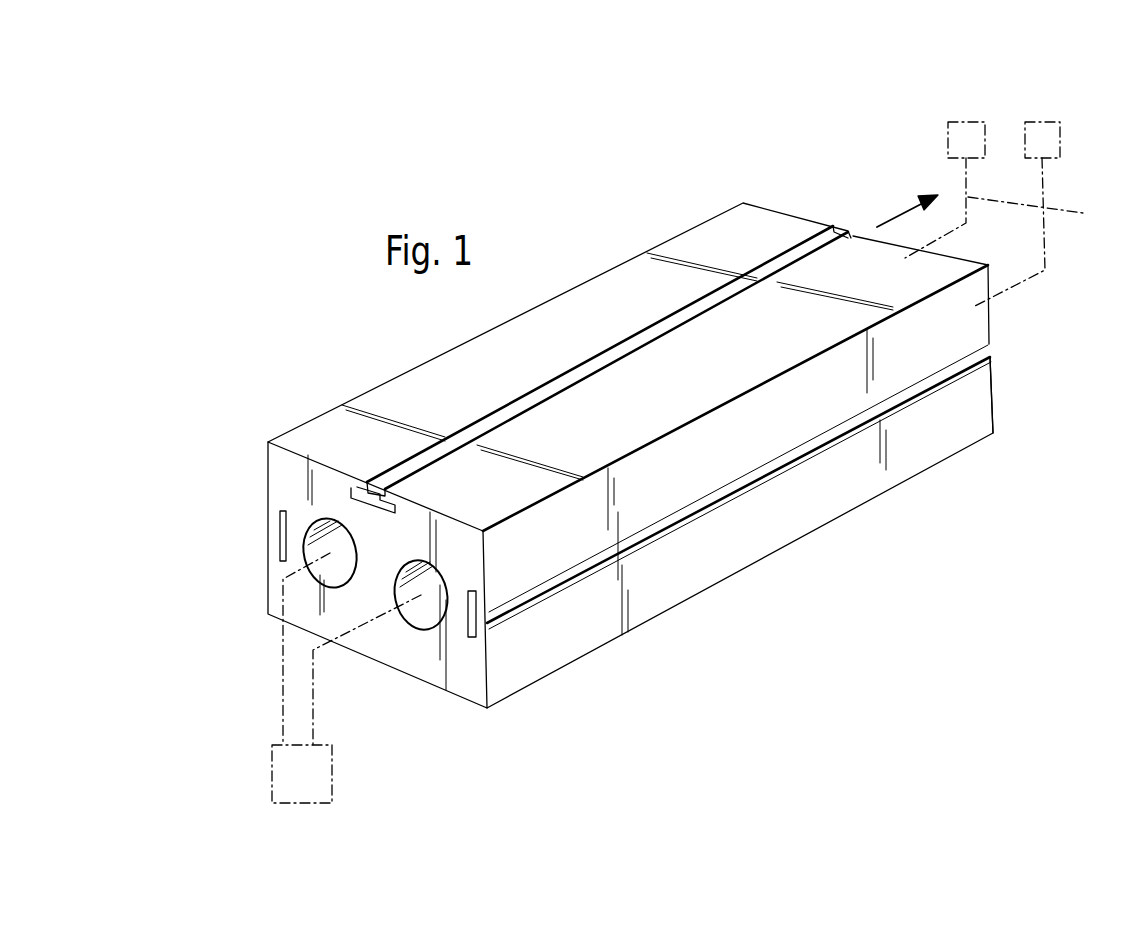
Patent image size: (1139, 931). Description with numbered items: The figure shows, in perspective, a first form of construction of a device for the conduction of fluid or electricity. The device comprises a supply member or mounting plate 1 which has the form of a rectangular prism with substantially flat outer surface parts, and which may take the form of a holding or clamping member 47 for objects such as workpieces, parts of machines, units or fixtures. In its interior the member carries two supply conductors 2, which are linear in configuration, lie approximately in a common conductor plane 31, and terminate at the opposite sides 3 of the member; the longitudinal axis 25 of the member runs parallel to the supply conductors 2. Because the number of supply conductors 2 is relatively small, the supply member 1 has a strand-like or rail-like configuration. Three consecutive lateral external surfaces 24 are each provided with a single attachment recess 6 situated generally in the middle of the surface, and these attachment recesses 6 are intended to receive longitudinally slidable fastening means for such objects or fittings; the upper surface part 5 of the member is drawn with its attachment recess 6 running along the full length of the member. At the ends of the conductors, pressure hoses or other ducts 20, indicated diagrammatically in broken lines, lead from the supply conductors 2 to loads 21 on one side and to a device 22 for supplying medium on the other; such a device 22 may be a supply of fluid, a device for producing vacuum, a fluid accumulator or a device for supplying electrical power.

The supply member 1 is at (750, 540).
The supply conductor 2 is at (300, 542).
The side of the member 3 is at (415, 638).
The cover plate 5 is at (698, 279).
The attachment recess 6 is at (560, 391).
The ducts 20 is at (313, 700).
The loads 21 is at (1037, 122).
The device for supplying medium 22 is at (325, 762).
The lateral external surface 24 is at (263, 472).
The longitudinal axis 25 is at (888, 218).
The conductor plane 31 is at (997, 412).
The holding or clamping member 47 is at (903, 467).